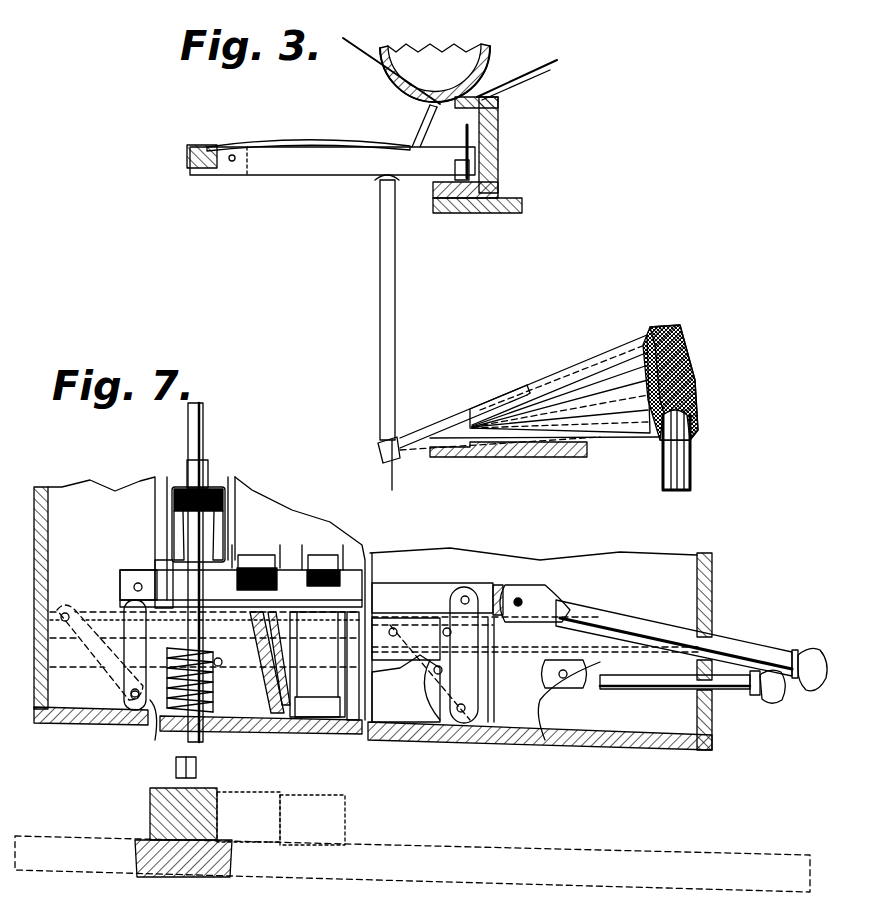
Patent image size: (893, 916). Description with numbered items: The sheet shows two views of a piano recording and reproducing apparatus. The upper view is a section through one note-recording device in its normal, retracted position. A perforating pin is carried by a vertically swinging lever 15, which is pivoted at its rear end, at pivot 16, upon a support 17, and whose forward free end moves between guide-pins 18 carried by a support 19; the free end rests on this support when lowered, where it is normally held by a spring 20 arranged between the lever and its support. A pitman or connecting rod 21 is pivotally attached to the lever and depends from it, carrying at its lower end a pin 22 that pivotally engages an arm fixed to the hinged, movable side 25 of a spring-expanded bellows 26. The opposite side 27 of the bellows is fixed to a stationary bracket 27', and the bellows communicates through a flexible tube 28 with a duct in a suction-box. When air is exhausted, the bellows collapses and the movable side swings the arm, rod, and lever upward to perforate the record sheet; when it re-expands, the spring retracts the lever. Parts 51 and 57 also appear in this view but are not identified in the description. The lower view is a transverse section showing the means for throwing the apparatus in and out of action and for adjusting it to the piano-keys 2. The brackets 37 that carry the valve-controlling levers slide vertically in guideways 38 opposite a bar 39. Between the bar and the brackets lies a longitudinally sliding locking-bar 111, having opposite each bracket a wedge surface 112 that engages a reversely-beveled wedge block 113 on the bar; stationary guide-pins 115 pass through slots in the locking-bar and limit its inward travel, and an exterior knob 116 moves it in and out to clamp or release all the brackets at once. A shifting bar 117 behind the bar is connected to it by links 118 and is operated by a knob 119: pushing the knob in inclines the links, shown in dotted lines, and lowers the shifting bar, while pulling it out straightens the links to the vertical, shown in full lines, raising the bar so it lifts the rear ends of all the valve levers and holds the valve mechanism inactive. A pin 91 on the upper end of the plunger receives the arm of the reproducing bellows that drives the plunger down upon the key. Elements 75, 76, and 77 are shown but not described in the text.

In FIG. 7, the piano-key 2 is at (148, 800).
In FIG. 3, the lever 15 is at (330, 163).
In FIG. 3, the pivot 16 is at (232, 163).
In FIG. 3, the support 17 is at (200, 160).
In FIG. 3, the guide-pins 18 is at (470, 142).
In FIG. 3, the support 19 is at (500, 162).
In FIG. 3, the spring 20 is at (318, 137).
In FIG. 3, the pitman or connecting rod 21 is at (396, 300).
In FIG. 3, the pin 22 is at (400, 460).
In FIG. 3, the movable side or member of bellows 25 is at (556, 377).
In FIG. 3, the bellows or pneumatic actuator 26 is at (698, 385).
In FIG. 3, the opposite side of bellows 27 is at (531, 428).
In FIG. 3, the stationary bar or bracket 27' is at (508, 467).
In FIG. 3, the flexible tube 28 is at (692, 474).
In FIG. 3, the cradle 51 is at (460, 50).
In FIG. 3, the rod 57 is at (556, 60).
In FIG. 7, the bracket 37 is at (258, 565).
In FIG. 7, the guides or guideways 38 is at (365, 585).
In FIG. 7, the bar 39 is at (248, 700).
In FIG. 7, the lever 75 is at (155, 740).
In FIG. 7, the bracket 76 is at (225, 495).
In FIG. 7, the support 77 is at (190, 592).
In FIG. 7, the pin or projection 91 is at (201, 438).
In FIG. 7, the locking-bar 111 is at (300, 565).
In FIG. 7, the cam or wedge surface 112 is at (318, 664).
In FIG. 7, the wedge block or surface 113 is at (270, 725).
In FIG. 7, the guide-pins 115 is at (218, 668).
In FIG. 7, the operating knob or handle 116 is at (640, 690).
In FIG. 7, the shifting bar 117 is at (432, 653).
In FIG. 7, the links 118 is at (110, 660).
In FIG. 7, the operating knob or lever 119 is at (650, 628).